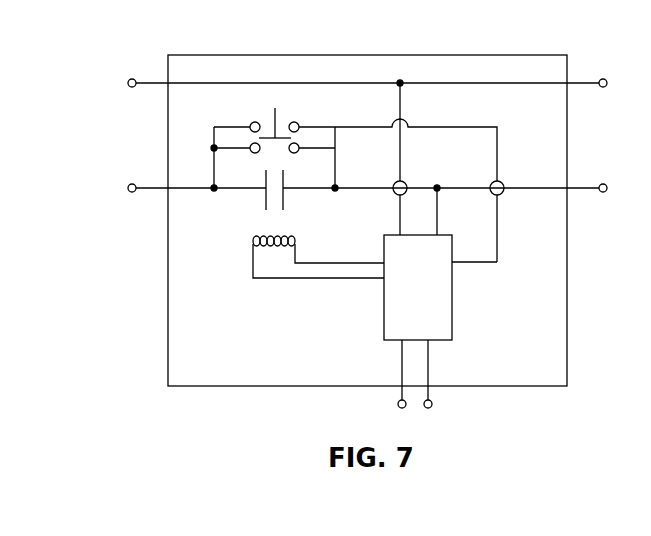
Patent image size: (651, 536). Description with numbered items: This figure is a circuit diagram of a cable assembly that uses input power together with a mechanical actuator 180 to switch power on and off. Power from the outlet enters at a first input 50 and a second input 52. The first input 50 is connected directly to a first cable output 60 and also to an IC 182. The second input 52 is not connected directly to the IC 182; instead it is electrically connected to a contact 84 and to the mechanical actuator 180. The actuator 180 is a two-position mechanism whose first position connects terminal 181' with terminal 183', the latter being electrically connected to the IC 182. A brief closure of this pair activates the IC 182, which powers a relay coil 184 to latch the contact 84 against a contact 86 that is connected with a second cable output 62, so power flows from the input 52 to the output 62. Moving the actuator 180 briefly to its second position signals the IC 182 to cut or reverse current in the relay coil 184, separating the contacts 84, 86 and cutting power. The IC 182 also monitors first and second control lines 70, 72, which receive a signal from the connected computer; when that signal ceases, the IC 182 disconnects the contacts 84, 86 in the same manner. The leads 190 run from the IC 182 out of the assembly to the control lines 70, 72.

The first input 50 is at (123, 95).
The second input 52 is at (123, 199).
The first cable output 60 is at (644, 95).
The second cable output 62 is at (644, 199).
The first control line 70 is at (403, 435).
The second control line 72 is at (456, 435).
The contact 84 is at (254, 199).
The contact 86 is at (296, 199).
The mechanical actuator 180 is at (291, 127).
The terminal 181' is at (181, 198).
The terminal 183' is at (384, 97).
The IC 182 is at (440, 283).
The relay coil 184 is at (272, 266).
The control leads 190 is at (401, 372).